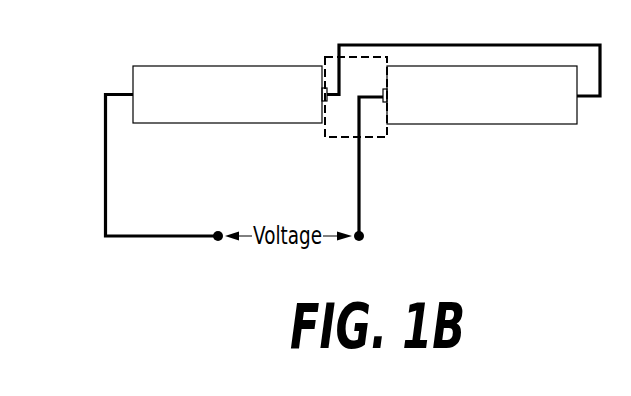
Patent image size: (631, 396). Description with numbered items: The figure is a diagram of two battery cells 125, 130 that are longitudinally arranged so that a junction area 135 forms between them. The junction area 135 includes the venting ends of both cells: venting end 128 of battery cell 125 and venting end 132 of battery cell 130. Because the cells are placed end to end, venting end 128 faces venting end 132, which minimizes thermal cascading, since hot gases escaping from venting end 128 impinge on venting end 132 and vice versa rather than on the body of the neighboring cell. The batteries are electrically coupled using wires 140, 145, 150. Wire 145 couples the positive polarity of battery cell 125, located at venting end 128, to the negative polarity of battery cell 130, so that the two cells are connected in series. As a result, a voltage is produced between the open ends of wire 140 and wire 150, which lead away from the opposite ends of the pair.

The battery cell 125 is at (227, 94).
The venting end 128 is at (323, 90).
The battery cell 130 is at (482, 95).
The venting end 132 is at (387, 99).
The junction area 135 is at (332, 137).
The wire 140 is at (106, 93).
The wire 145 is at (483, 44).
The wire 150 is at (360, 218).